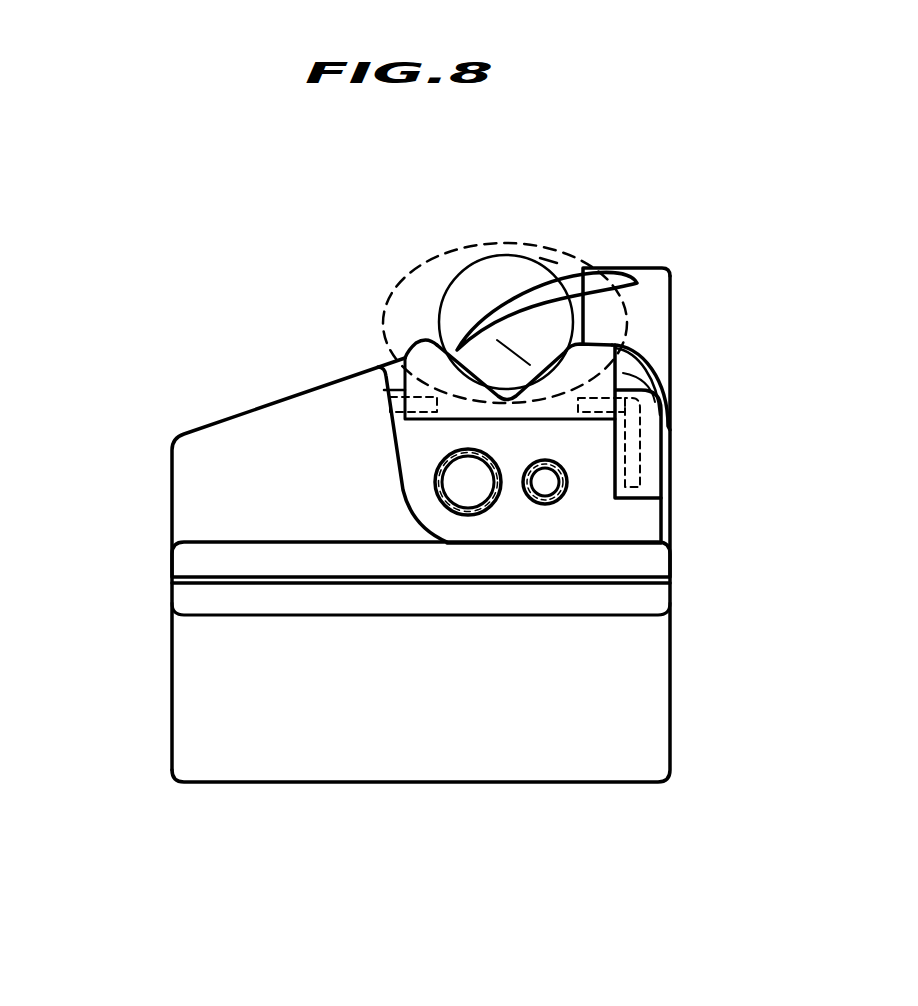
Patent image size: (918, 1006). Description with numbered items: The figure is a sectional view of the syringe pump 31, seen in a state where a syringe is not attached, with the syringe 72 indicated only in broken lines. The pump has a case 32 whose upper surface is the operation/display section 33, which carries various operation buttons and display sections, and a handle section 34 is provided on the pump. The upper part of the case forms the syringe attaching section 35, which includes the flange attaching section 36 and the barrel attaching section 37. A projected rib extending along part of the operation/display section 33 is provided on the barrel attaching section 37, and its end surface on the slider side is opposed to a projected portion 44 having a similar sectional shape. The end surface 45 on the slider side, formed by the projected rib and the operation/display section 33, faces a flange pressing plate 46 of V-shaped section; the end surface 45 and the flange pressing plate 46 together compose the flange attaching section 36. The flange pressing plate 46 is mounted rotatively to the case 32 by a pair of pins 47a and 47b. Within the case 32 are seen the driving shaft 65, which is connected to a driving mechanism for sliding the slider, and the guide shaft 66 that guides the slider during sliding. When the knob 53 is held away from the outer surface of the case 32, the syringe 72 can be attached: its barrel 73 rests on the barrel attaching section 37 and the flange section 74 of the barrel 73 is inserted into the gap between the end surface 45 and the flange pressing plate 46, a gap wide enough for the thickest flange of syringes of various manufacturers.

The syringe pump 31 is at (204, 295).
The case 32 is at (172, 502).
The operation/display section 33 is at (248, 412).
The handle section 34 is at (233, 602).
The syringe attaching section 35 is at (650, 243).
The flange attaching section 36 is at (645, 340).
The barrel attaching section 37 is at (428, 290).
The projected portion 44 is at (630, 375).
The end surface 45 is at (627, 380).
The flange pressing plate 46 is at (623, 442).
The pin 47a is at (648, 467).
The pin 47b is at (400, 357).
The knob 53 is at (527, 295).
The driving shaft 65 is at (472, 493).
The guide shaft 66 is at (553, 487).
The syringe 72 is at (500, 226).
The barrel 73 is at (545, 262).
The flange section 74 is at (393, 297).